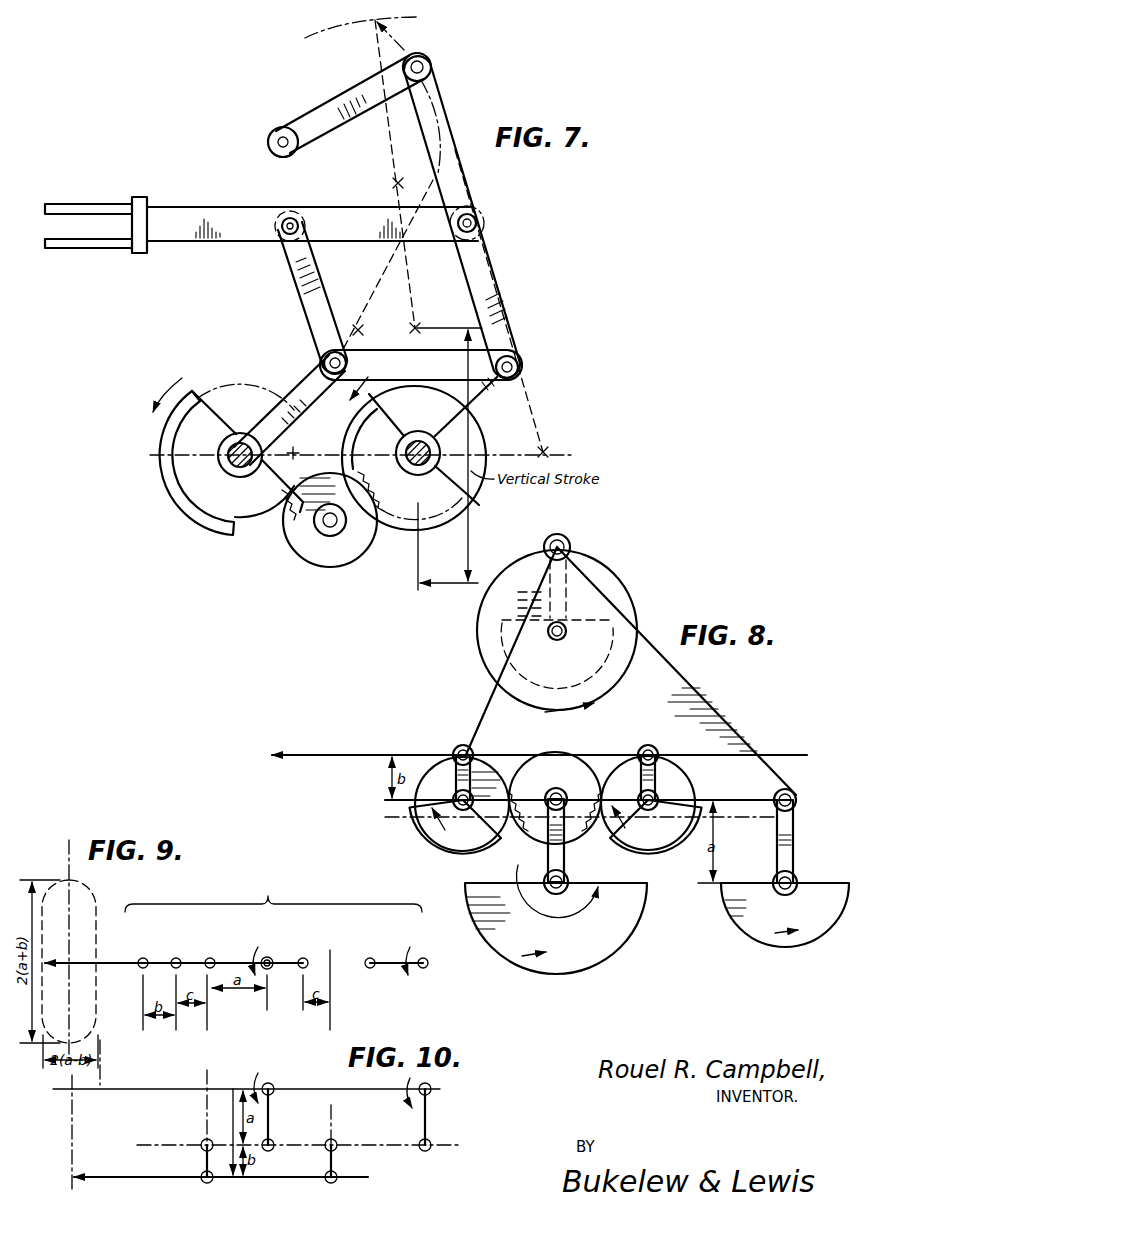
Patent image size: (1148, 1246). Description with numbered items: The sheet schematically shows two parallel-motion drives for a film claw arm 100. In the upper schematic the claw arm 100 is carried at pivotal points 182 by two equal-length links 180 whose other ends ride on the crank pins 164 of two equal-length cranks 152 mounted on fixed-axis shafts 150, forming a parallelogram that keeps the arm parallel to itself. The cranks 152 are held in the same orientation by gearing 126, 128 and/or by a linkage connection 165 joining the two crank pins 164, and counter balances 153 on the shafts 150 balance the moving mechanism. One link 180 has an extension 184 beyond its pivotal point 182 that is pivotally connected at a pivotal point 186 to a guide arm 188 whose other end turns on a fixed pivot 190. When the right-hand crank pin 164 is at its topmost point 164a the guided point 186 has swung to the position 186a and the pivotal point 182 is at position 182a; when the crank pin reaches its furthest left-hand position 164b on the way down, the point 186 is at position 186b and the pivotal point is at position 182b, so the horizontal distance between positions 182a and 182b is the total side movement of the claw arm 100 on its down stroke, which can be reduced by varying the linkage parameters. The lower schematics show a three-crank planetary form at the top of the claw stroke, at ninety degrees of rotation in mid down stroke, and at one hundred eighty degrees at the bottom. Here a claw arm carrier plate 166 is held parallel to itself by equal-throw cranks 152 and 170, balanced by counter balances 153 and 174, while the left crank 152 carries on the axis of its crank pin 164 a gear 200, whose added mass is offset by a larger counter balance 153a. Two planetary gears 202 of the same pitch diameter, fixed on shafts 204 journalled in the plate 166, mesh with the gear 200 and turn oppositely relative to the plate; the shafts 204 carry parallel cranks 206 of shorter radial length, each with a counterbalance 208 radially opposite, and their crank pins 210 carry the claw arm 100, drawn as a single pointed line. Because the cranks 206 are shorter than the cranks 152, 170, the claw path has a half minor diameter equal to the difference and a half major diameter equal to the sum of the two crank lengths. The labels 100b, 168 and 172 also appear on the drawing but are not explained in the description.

In FIG. 7, the claw arm 100 is at (212, 243).
In FIG. 8, the claw arm 100 is at (400, 755).
In FIG. 9, the claw arm 100 is at (112, 966).
In FIG. 10, the claw arm 100 is at (95, 1180).
In FIG. 9, the claw arm path loop 100b is at (90, 1028).
In FIG. 7, the gearing 126 is at (208, 530).
In FIG. 7, the gearing 128 is at (312, 566).
In FIG. 7, the fixed axis shaft 150 is at (240, 468).
In FIG. 8, the fixed axis shaft 150 is at (552, 893).
In FIG. 9, the fixed axis shaft 150 is at (268, 957).
In FIG. 10, the fixed axis shaft 150 is at (274, 1088).
In FIG. 7, the crank 152 is at (310, 384).
In FIG. 8, the crank 152 is at (565, 850).
In FIG. 9, the crank 152 is at (214, 966).
In FIG. 10, the crank 152 is at (270, 1114).
In FIG. 7, the counter balance 153 is at (168, 480).
In FIG. 8, the counter balance 153 is at (780, 948).
In FIG. 8, the counter balance mass 153a is at (690, 938).
In FIG. 7, the crank pin 164 is at (325, 360).
In FIG. 8, the crank pin 164 is at (567, 796).
In FIG. 9, the crank pin 164 is at (212, 962).
In FIG. 10, the crank pin 164 is at (272, 1150).
In FIG. 7, the topmost point of crank pin 164a is at (418, 329).
In FIG. 7, the furthest left hand position of crank pin 164b is at (296, 452).
In FIG. 7, the linkage connection 165 is at (421, 365).
In FIG. 8, the claw arm carrier plate 166 is at (658, 681).
In FIG. 8, the lever pivot 168 is at (570, 545).
In FIG. 8, the crank 170 is at (576, 585).
In FIG. 8, the drive pin 172 is at (552, 640).
In FIG. 8, the counter balance 174 is at (613, 628).
In FIG. 7, the link 180 is at (312, 298).
In FIG. 7, the pivotal point 182 is at (289, 217).
In FIG. 7, the position of pivotal point 182a is at (396, 182).
In FIG. 7, the position of pivotal point 182b is at (360, 331).
In FIG. 7, the link extension 184 is at (450, 106).
In FIG. 7, the pivotal point 186 is at (431, 66).
In FIG. 7, the position of pivotal point 186a is at (380, 18).
In FIG. 7, the position of pivotal point 186b is at (430, 181).
In FIG. 7, the guide arm 188 is at (354, 98).
In FIG. 7, the fixed pivot 190 is at (290, 112).
In FIG. 8, the gear 200 is at (580, 758).
In FIG. 8, the planetary gear 202 is at (426, 830).
In FIG. 8, the shaft 204 is at (460, 812).
In FIG. 9, the shaft 204 is at (146, 968).
In FIG. 10, the shaft 204 is at (203, 1142).
In FIG. 8, the crank 206 is at (471, 762).
In FIG. 9, the crank 206 is at (160, 962).
In FIG. 10, the crank 206 is at (206, 1160).
In FIG. 8, the counterbalance 208 is at (406, 820).
In FIG. 8, the crank pin 210 is at (461, 750).
In FIG. 9, the crank pin 210 is at (178, 962).
In FIG. 10, the crank pin 210 is at (207, 1184).